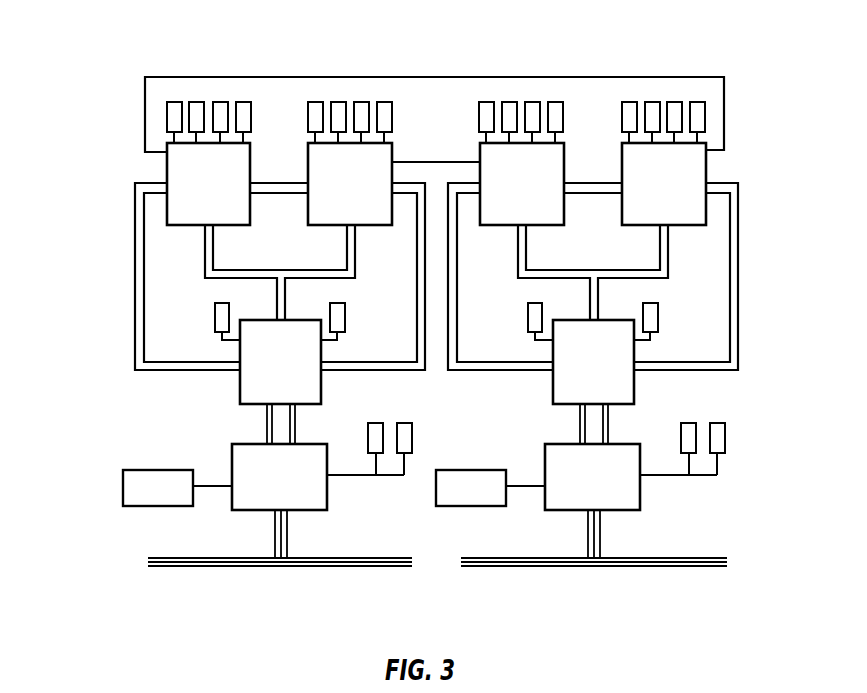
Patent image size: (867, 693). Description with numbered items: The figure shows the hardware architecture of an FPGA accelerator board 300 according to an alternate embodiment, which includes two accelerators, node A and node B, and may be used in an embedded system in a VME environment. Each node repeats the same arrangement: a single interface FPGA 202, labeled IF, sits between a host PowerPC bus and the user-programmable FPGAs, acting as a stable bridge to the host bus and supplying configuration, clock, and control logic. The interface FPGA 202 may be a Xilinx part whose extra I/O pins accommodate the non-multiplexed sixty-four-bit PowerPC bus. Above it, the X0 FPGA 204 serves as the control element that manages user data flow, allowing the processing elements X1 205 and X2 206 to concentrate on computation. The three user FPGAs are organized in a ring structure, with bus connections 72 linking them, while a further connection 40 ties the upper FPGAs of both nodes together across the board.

The FPGA accelerator board 300 is at (99, 65).
The interconnect link 40 is at (429, 172).
The X1 user-programmable FPGA 205 is at (165, 173).
The X2 user-programmable FPGA 206 is at (370, 230).
The interconnect bus 72 is at (260, 288).
The X0 user-programmable FPGA 204 is at (321, 380).
The interface FPGA 202 is at (313, 510).